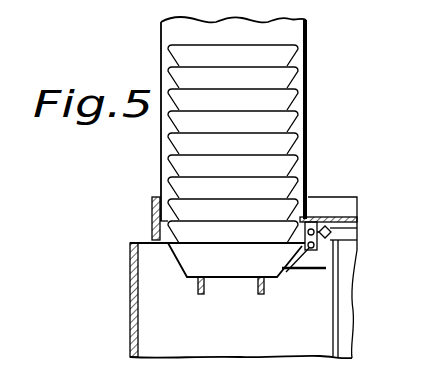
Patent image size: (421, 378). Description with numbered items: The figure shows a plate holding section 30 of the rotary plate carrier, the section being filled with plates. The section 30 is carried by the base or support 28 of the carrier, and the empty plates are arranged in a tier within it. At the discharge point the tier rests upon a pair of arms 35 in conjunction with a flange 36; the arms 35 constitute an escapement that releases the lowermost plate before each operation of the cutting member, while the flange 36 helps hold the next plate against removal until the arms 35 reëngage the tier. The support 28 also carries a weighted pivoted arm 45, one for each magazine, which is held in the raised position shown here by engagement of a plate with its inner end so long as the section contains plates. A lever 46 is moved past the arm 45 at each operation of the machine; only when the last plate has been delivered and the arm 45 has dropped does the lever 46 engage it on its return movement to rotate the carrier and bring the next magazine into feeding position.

The plate holding section 30 is at (309, 165).
The base or support 28 is at (338, 221).
The pivoted arm 45 is at (332, 238).
The arms 35 is at (205, 290).
The flange 36 is at (313, 270).
The lever 46 is at (338, 311).